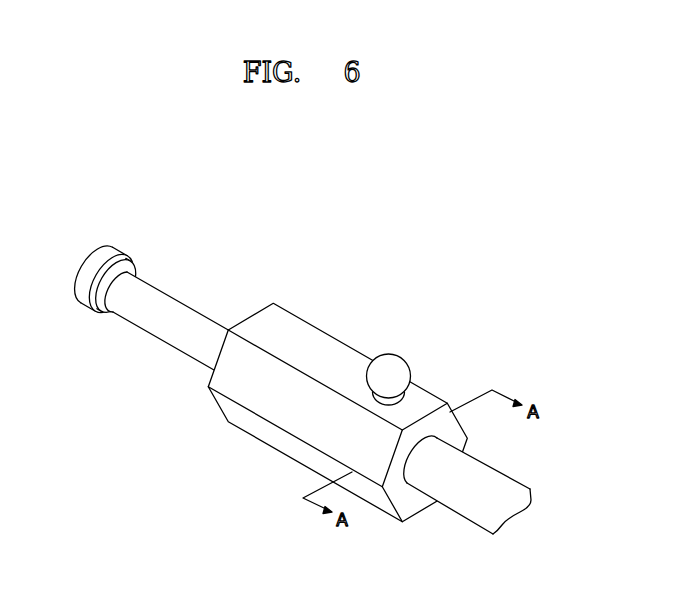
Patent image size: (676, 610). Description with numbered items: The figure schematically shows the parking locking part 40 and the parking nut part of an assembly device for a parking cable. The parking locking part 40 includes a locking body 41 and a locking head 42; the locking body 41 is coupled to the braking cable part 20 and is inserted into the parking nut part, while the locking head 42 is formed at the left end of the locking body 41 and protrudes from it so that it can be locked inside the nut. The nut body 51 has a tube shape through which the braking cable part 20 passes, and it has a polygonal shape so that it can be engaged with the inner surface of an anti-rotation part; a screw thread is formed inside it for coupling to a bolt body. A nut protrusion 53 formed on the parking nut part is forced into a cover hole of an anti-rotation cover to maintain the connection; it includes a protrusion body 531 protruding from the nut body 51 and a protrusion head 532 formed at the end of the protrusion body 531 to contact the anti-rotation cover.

The braking cable part 20 is at (148, 328).
The parking locking part 40 is at (128, 231).
The locking body 41 is at (123, 270).
The locking head 42 is at (105, 258).
The nut body 51 is at (315, 338).
The nut protrusion 53 is at (421, 318).
The protrusion body 531 is at (411, 396).
The protrusion head 532 is at (390, 370).